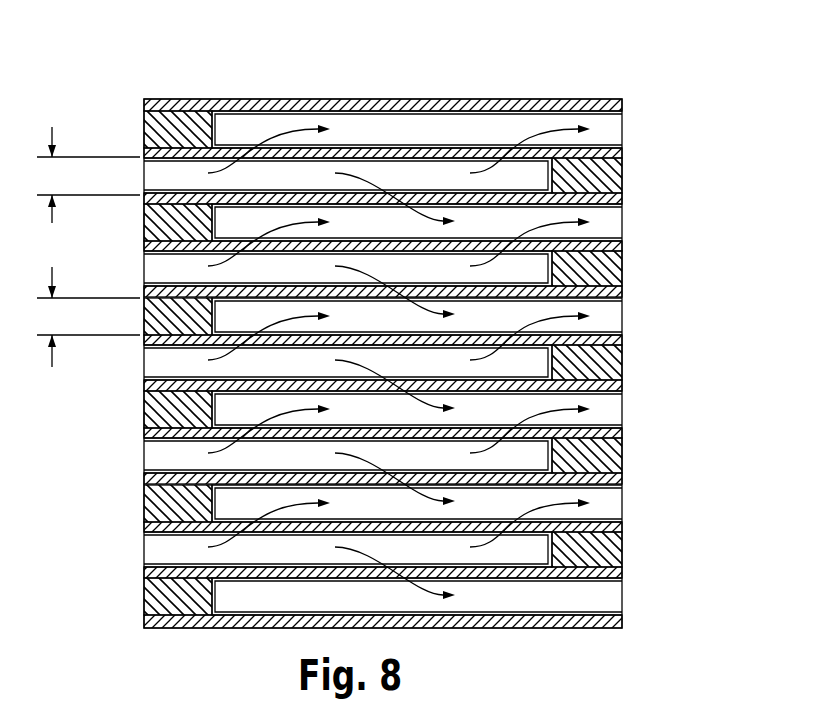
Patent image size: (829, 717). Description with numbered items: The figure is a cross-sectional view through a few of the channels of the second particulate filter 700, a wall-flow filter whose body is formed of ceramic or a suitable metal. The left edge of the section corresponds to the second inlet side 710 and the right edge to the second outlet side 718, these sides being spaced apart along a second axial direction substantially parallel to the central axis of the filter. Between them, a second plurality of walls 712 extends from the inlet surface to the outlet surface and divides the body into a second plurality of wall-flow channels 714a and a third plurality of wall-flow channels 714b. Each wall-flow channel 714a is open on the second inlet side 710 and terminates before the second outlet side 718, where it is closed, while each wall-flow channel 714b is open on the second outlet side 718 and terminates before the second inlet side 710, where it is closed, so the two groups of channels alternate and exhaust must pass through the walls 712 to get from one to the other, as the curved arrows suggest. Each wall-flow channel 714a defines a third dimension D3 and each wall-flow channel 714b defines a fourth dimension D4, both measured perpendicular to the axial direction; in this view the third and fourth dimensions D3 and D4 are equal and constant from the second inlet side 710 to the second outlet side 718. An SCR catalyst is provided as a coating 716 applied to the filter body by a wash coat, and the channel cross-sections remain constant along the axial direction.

The second particulate filter 700 is at (407, 314).
The second inlet side 710 is at (110, 128).
The second plurality of walls 712 is at (345, 147).
The second plurality of wall-flow channels 714a is at (428, 270).
The third plurality of wall-flow channels 714b is at (520, 220).
The coating 716 is at (552, 268).
The second outlet side 718 is at (665, 122).
The third dimension D3 is at (88, 175).
The fourth dimension D4 is at (88, 317).